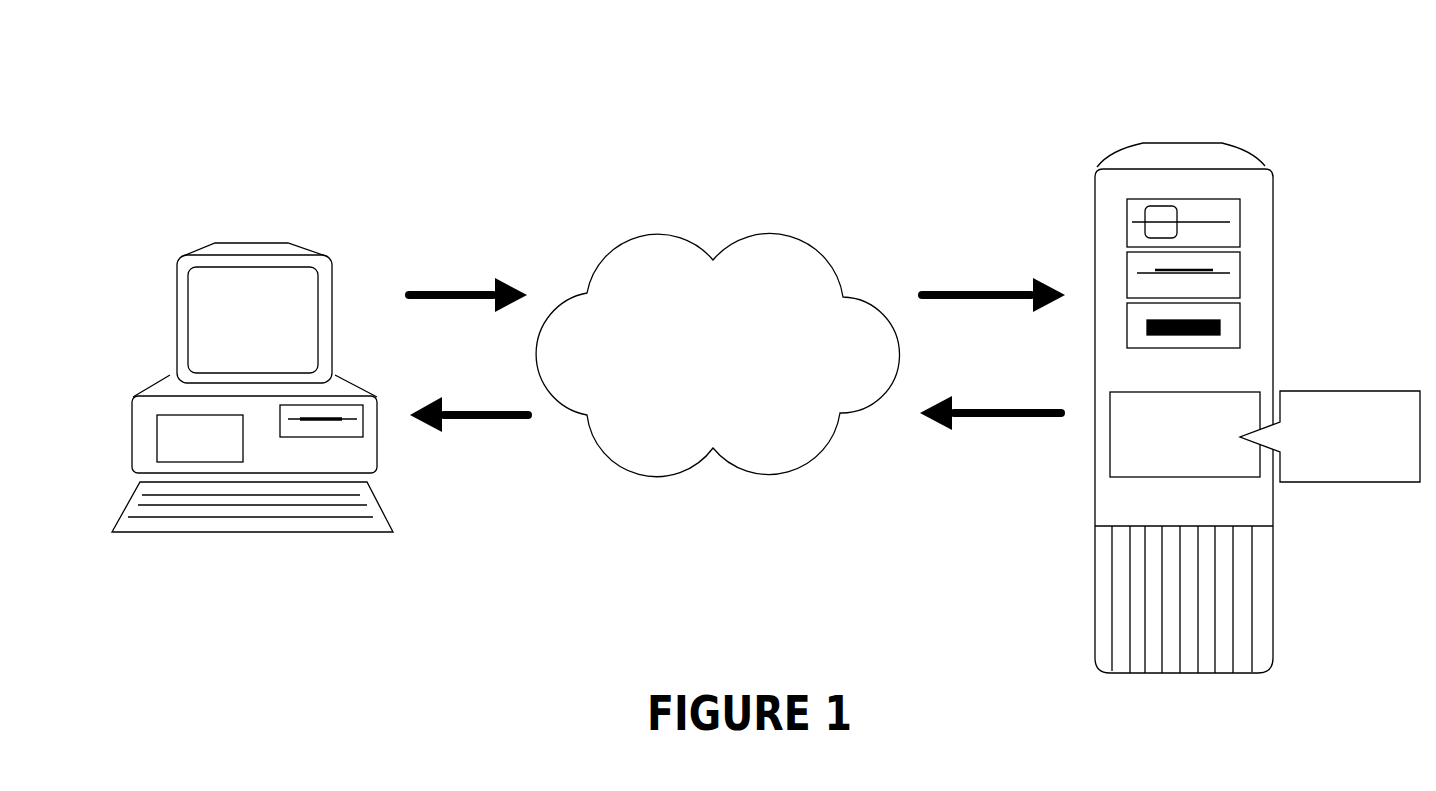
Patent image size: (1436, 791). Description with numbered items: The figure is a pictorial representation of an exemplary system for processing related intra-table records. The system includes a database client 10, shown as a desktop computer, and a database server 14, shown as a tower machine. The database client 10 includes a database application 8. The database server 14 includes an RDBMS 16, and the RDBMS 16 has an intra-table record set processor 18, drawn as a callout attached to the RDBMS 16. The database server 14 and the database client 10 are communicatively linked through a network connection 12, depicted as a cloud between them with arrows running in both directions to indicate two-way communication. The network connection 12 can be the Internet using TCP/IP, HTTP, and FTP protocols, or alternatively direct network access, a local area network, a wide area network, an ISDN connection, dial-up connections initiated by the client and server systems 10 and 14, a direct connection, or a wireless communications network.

The database application 8 is at (200, 438).
The database client 10 is at (309, 214).
The network connection 12 is at (800, 245).
The database server 14 is at (1268, 120).
The RDBMS 16 is at (1185, 434).
The intra-table record set processor 18 is at (1330, 436).